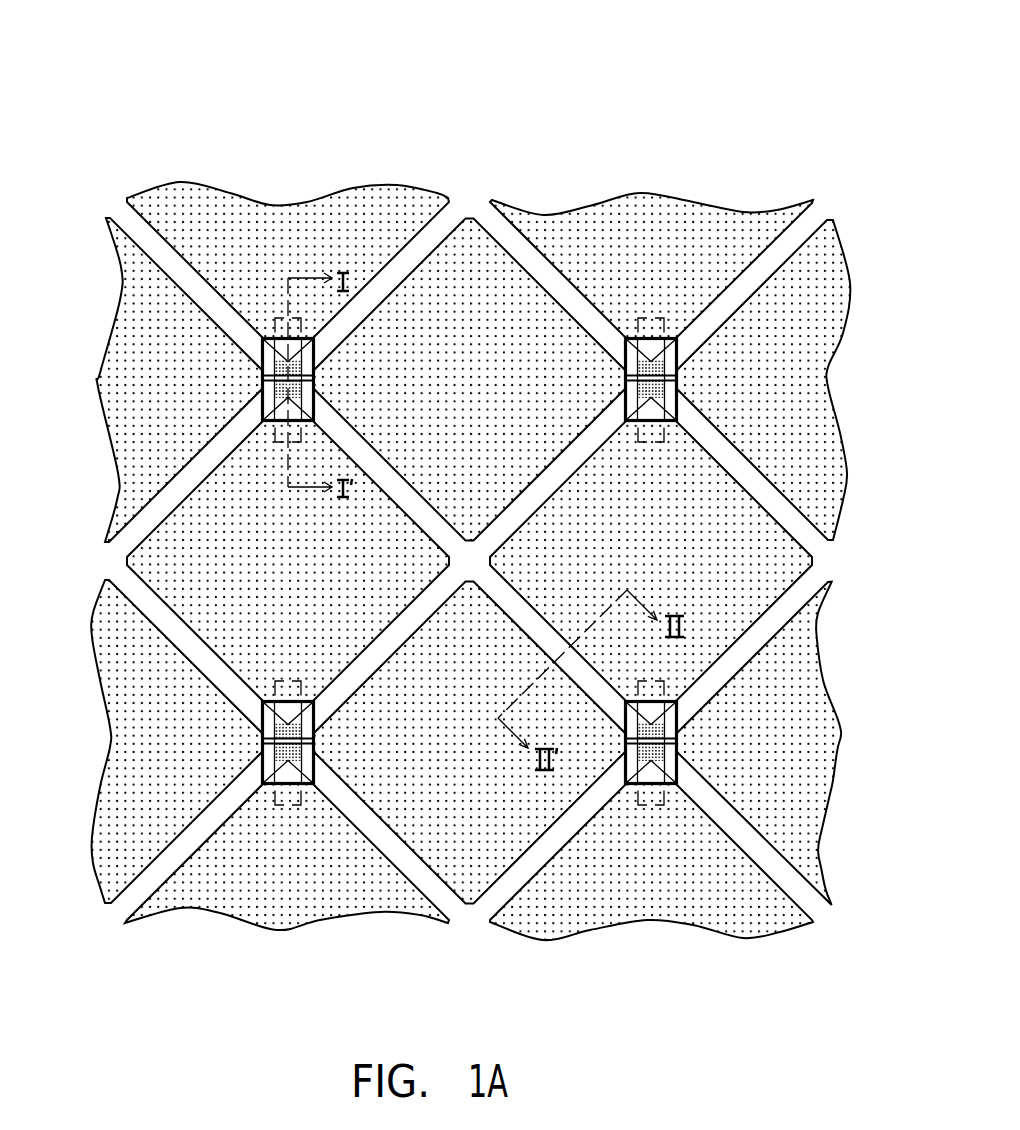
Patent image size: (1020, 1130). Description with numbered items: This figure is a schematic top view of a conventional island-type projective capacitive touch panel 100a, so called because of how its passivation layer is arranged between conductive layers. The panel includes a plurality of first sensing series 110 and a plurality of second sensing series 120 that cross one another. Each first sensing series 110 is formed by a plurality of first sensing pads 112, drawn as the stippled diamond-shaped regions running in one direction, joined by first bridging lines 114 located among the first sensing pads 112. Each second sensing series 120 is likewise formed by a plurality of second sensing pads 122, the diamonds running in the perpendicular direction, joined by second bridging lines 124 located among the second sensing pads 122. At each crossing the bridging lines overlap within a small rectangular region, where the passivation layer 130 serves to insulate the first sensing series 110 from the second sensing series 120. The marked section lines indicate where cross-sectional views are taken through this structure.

The projective capacitive touch panel 100a is at (829, 985).
The first sensing series 110 is at (678, 2).
The first sensing pads 112 is at (465, 222).
The first bridging lines 114 is at (300, 378).
The second sensing series 120 is at (678, 92).
The second sensing pads 122 is at (168, 207).
The second bridging lines 124 is at (300, 359).
The passivation layer 130 is at (300, 357).